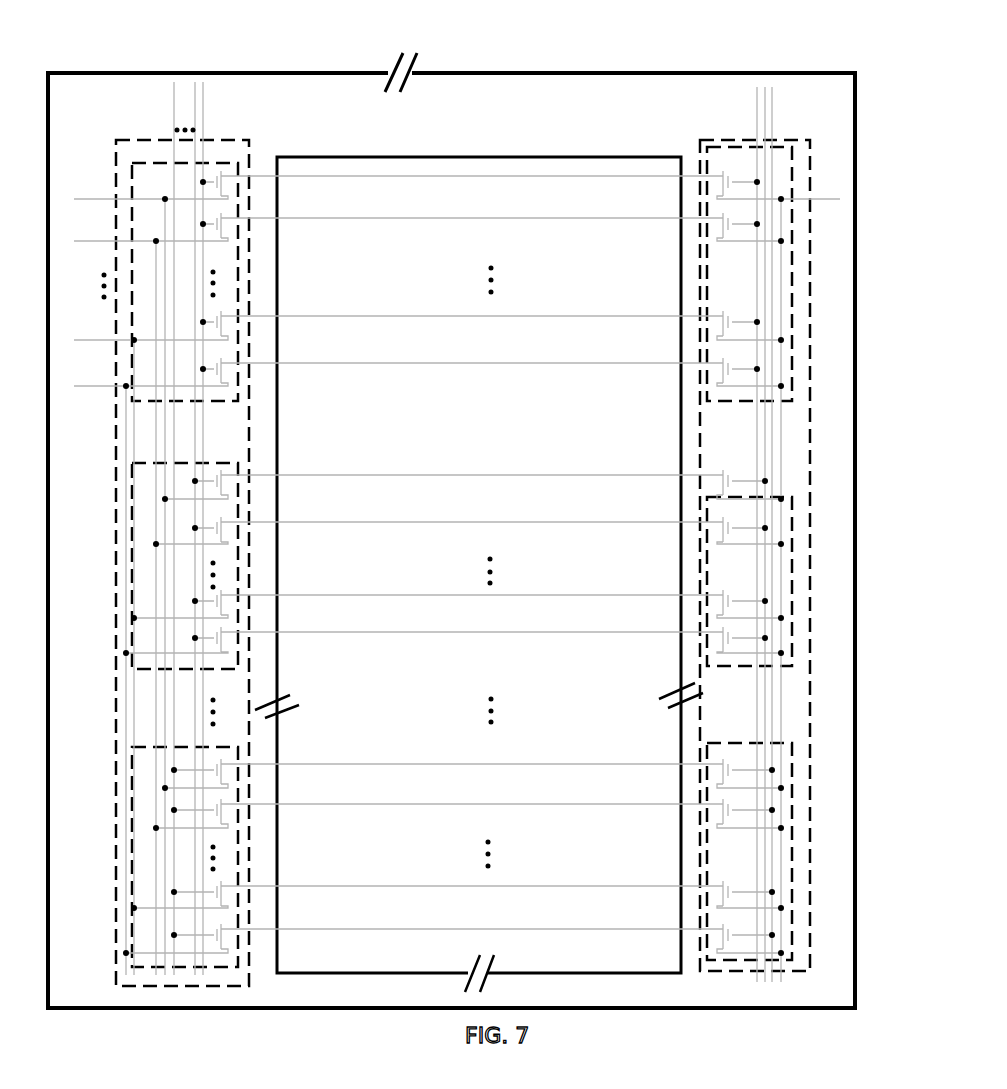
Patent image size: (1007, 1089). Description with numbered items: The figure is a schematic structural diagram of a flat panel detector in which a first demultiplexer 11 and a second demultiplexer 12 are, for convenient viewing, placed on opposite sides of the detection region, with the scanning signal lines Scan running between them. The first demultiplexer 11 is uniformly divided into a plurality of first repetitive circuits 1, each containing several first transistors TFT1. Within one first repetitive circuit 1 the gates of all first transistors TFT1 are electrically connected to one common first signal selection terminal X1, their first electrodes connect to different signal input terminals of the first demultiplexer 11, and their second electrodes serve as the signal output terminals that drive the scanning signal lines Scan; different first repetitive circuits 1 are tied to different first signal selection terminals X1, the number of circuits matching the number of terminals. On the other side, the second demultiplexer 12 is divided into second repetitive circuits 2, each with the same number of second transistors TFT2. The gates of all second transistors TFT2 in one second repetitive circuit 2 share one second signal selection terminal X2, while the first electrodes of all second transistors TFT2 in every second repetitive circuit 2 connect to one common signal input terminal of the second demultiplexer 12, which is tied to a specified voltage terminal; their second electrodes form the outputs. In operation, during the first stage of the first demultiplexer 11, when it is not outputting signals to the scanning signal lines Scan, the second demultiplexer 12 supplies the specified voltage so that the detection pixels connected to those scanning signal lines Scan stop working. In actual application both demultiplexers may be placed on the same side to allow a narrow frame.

The first demultiplexer 11 is at (128, 138).
The first repetitive circuit 1 is at (216, 162).
The first transistor TFT1 is at (226, 171).
The first signal selection terminal X1 is at (204, 86).
The scanning signal line Scan is at (500, 176).
The second transistor TFT2 is at (722, 168).
The second signal selection terminal X2 is at (773, 90).
The second demultiplexer 12 is at (812, 142).
The second repetitive circuit 2 is at (794, 182).